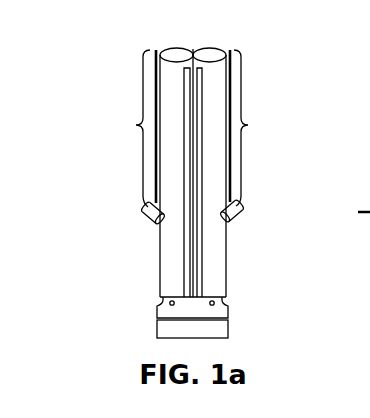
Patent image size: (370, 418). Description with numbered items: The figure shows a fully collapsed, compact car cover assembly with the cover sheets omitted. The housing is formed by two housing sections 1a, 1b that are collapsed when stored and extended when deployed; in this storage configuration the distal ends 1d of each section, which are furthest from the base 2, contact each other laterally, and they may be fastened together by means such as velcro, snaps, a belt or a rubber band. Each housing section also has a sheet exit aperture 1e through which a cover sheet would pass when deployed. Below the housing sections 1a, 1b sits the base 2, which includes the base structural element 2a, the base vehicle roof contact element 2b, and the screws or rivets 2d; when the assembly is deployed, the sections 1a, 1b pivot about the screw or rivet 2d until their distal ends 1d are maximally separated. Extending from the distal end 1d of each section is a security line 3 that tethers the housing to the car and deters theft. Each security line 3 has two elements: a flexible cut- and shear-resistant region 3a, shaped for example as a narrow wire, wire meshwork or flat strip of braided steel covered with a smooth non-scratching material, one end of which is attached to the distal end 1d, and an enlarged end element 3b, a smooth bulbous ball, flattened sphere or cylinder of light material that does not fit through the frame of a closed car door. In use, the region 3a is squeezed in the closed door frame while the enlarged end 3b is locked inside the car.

The housing section 1a is at (64, 50).
The housing section 1b is at (320, 47).
The distal end 1d is at (212, 50).
The housing sheet exit aperture 1e is at (187, 262).
The base 2 is at (155, 295).
The base structural element 2a is at (230, 296).
The base vehicle roof contact element 2b is at (230, 320).
The screw or rivet 2d is at (163, 296).
The security line 3 is at (102, 50).
The flexible cut- and shear-resistant region of security line 3a is at (195, 128).
The enlarged end of security line 3b is at (146, 214).